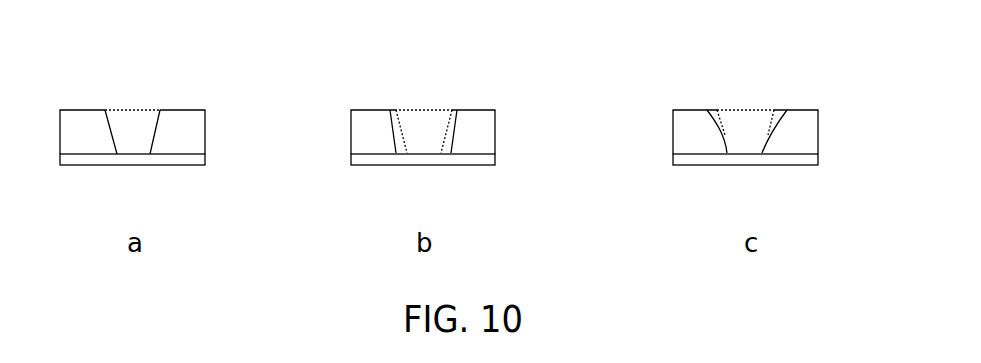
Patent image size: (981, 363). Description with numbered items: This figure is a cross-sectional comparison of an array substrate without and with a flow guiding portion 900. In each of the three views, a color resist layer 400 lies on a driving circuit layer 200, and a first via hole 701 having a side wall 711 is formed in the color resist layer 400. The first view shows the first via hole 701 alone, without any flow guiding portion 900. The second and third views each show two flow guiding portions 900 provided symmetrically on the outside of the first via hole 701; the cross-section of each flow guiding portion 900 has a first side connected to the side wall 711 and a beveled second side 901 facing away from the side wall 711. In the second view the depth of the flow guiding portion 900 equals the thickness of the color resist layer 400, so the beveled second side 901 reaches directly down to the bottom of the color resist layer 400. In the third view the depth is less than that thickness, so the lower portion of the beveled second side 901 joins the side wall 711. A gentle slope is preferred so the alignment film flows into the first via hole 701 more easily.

The driving circuit layer 200 is at (193, 160).
The color resist layer 400 is at (193, 130).
The first via hole 701 is at (133, 142).
The side wall 711 is at (153, 132).
The flow guiding portion 900 is at (397, 138).
The second side 901 is at (559, 163).